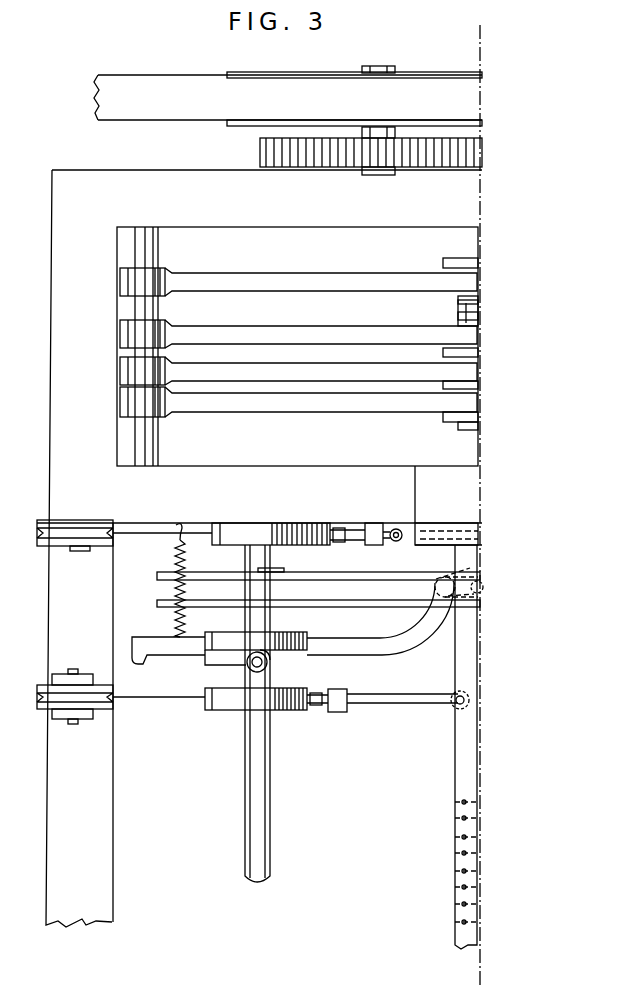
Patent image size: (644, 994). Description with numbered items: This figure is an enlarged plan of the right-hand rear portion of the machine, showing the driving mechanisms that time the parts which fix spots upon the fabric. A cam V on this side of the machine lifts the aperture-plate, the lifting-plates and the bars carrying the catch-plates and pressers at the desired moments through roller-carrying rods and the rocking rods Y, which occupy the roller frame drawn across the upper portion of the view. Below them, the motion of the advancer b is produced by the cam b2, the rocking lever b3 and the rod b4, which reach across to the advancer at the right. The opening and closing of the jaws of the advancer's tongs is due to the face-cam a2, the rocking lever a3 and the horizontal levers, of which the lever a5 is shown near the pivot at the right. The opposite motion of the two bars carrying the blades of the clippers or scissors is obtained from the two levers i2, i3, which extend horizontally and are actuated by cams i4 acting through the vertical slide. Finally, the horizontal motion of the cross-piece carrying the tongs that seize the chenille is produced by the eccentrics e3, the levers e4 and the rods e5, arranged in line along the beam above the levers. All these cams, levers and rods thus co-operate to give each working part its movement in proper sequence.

The rocking rods Y is at (297, 346).
The cam V is at (478, 316).
The eccentric e3 is at (253, 530).
The lever e4 is at (375, 524).
The rod e5 is at (398, 541).
The horizontal lever a5 is at (464, 582).
The lever i2 is at (355, 582).
The lever i3 is at (353, 603).
The cam i4 is at (258, 713).
The face-cam a2 is at (262, 636).
The rocking lever a3 is at (352, 641).
The cam b2 is at (293, 690).
The rocking lever b3 is at (341, 690).
The rod b4 is at (411, 699).
The advancer b is at (470, 655).